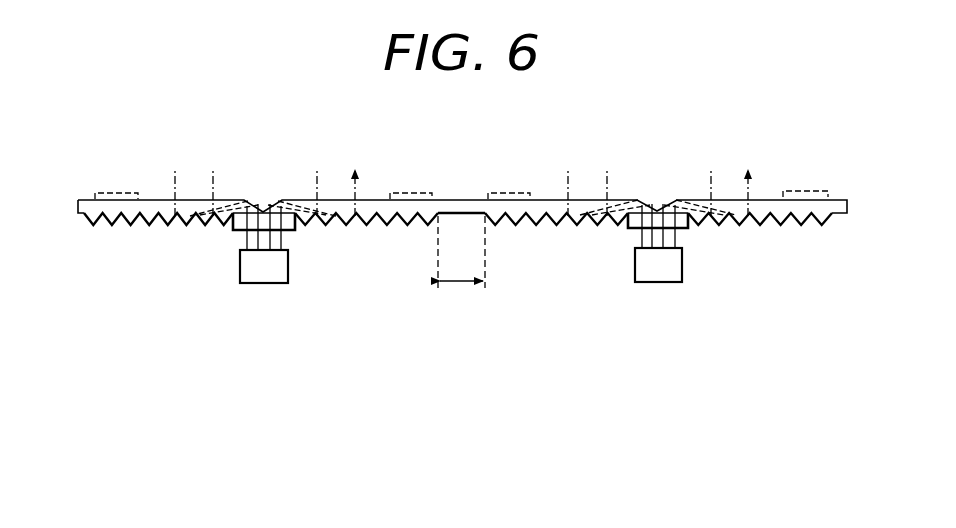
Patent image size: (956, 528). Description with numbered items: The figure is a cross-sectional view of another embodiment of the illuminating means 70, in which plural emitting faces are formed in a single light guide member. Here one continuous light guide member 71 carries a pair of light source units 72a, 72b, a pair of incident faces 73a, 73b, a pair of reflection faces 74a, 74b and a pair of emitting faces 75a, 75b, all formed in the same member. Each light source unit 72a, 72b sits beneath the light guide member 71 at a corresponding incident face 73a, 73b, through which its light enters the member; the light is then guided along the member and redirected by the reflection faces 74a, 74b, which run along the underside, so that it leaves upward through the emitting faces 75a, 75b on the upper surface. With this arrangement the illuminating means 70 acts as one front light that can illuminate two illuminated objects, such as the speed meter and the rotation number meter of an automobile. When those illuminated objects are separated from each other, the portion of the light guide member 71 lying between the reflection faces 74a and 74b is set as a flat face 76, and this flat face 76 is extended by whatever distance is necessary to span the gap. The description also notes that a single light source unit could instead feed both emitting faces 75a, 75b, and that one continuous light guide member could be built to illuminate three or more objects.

The illuminating means 70 is at (715, 89).
The light guide member 71 is at (78, 214).
The light source unit 72a is at (265, 284).
The light source unit 72b is at (658, 283).
The incident face 73a is at (294, 233).
The incident face 73b is at (690, 231).
The reflection face 74a is at (147, 229).
The reflection face 74b is at (543, 229).
The emitting face 75a is at (156, 199).
The emitting face 75b is at (768, 199).
The flat face 76 is at (461, 283).